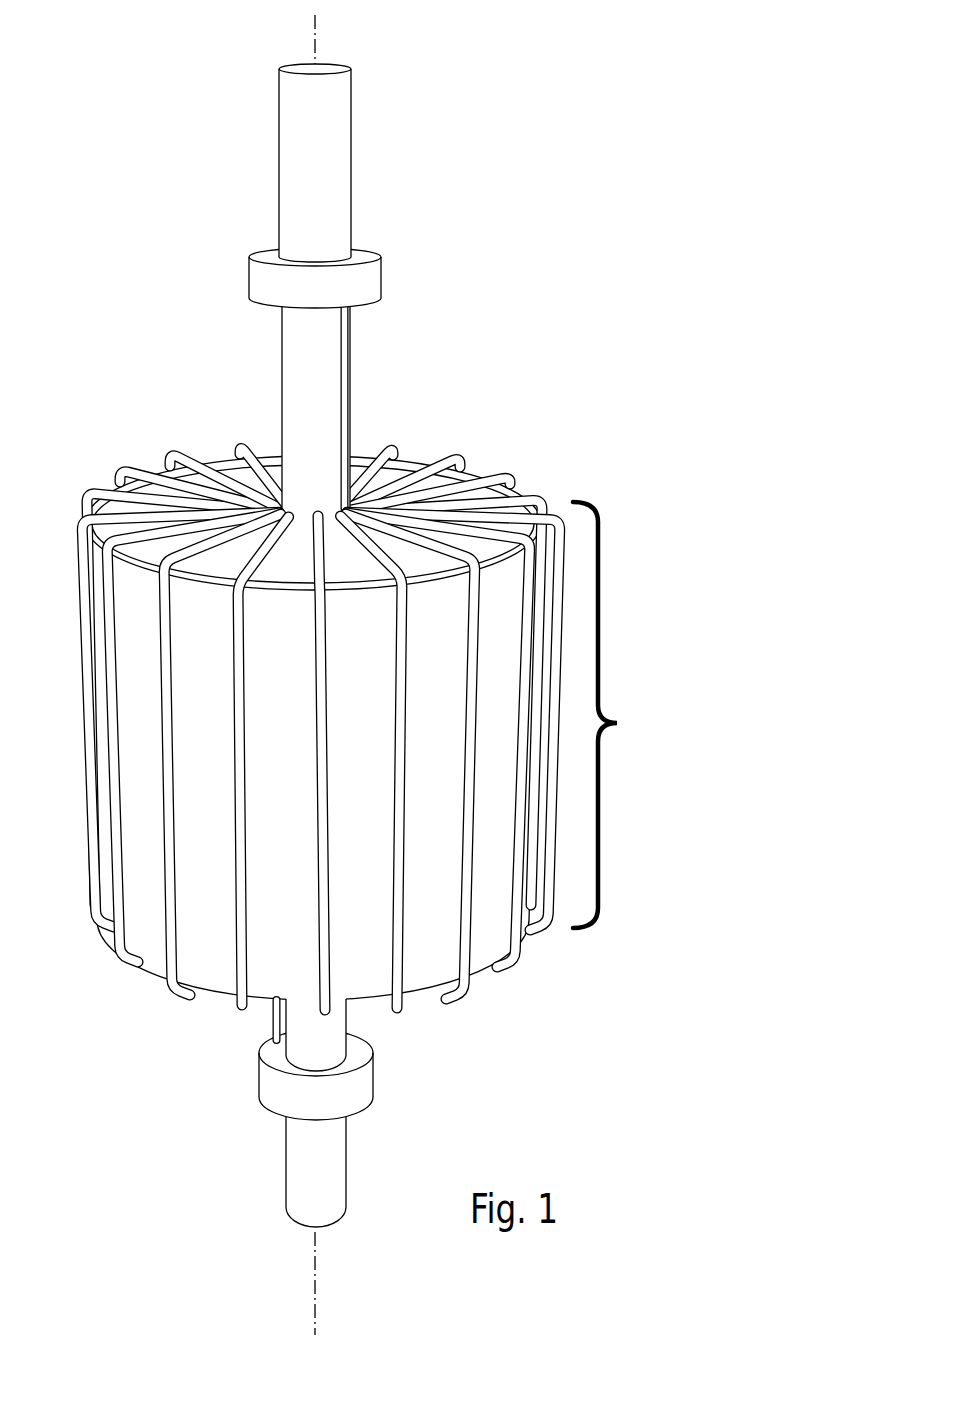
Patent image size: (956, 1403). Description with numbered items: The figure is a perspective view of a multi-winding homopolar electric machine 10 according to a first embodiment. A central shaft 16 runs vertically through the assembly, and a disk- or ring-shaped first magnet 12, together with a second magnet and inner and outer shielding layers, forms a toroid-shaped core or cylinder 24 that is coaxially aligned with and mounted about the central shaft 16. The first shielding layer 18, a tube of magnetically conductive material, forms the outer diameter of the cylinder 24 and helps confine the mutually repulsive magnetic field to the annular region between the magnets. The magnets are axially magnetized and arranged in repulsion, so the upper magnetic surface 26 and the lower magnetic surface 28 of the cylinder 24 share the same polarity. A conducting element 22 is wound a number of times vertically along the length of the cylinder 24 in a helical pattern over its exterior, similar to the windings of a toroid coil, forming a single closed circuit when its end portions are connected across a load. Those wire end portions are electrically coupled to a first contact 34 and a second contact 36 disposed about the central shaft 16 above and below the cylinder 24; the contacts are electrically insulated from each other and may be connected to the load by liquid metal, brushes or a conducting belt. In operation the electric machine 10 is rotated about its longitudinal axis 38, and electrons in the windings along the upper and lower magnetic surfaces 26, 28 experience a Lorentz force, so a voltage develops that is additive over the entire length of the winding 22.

The multi-winding homopolar electric machine 10 is at (352, 669).
The first magnet 12 is at (347, 645).
The central shaft 16 is at (347, 142).
The first electromagnetic shielding layer 18 is at (299, 775).
The conducting element 22 is at (348, 372).
The cylinder 24 is at (610, 715).
The upper magnetic surface 26 is at (402, 463).
The lower magnetic surface 28 is at (157, 968).
The first contact 34 is at (359, 285).
The second contact 36 is at (360, 1089).
The longitudinal axis 38 is at (315, 52).